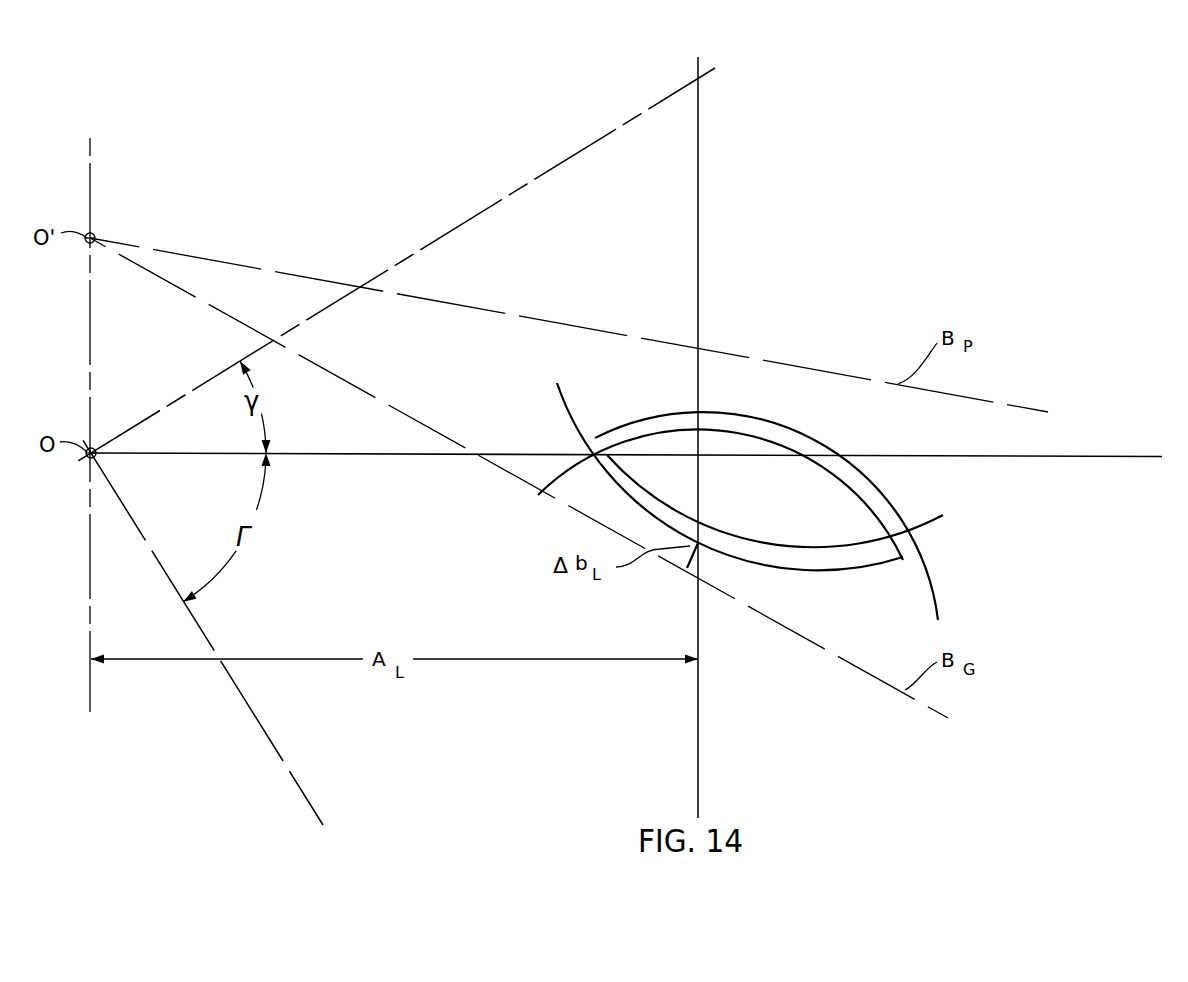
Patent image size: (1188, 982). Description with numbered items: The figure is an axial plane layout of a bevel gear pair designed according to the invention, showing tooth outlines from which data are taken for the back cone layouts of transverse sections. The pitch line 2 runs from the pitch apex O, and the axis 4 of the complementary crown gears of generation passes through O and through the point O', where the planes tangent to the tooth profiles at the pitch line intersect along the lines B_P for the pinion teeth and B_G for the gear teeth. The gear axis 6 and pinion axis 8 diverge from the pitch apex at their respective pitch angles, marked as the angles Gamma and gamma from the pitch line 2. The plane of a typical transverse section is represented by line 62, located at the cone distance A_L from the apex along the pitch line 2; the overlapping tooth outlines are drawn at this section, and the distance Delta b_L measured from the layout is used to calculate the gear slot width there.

The pitch line 2 is at (960, 457).
The axis of the complementary crown gears of generation 4 is at (92, 326).
The gear axis 6 is at (262, 730).
The pinion axis 8 is at (520, 188).
The line representing the plane of a transverse section 62 is at (698, 238).